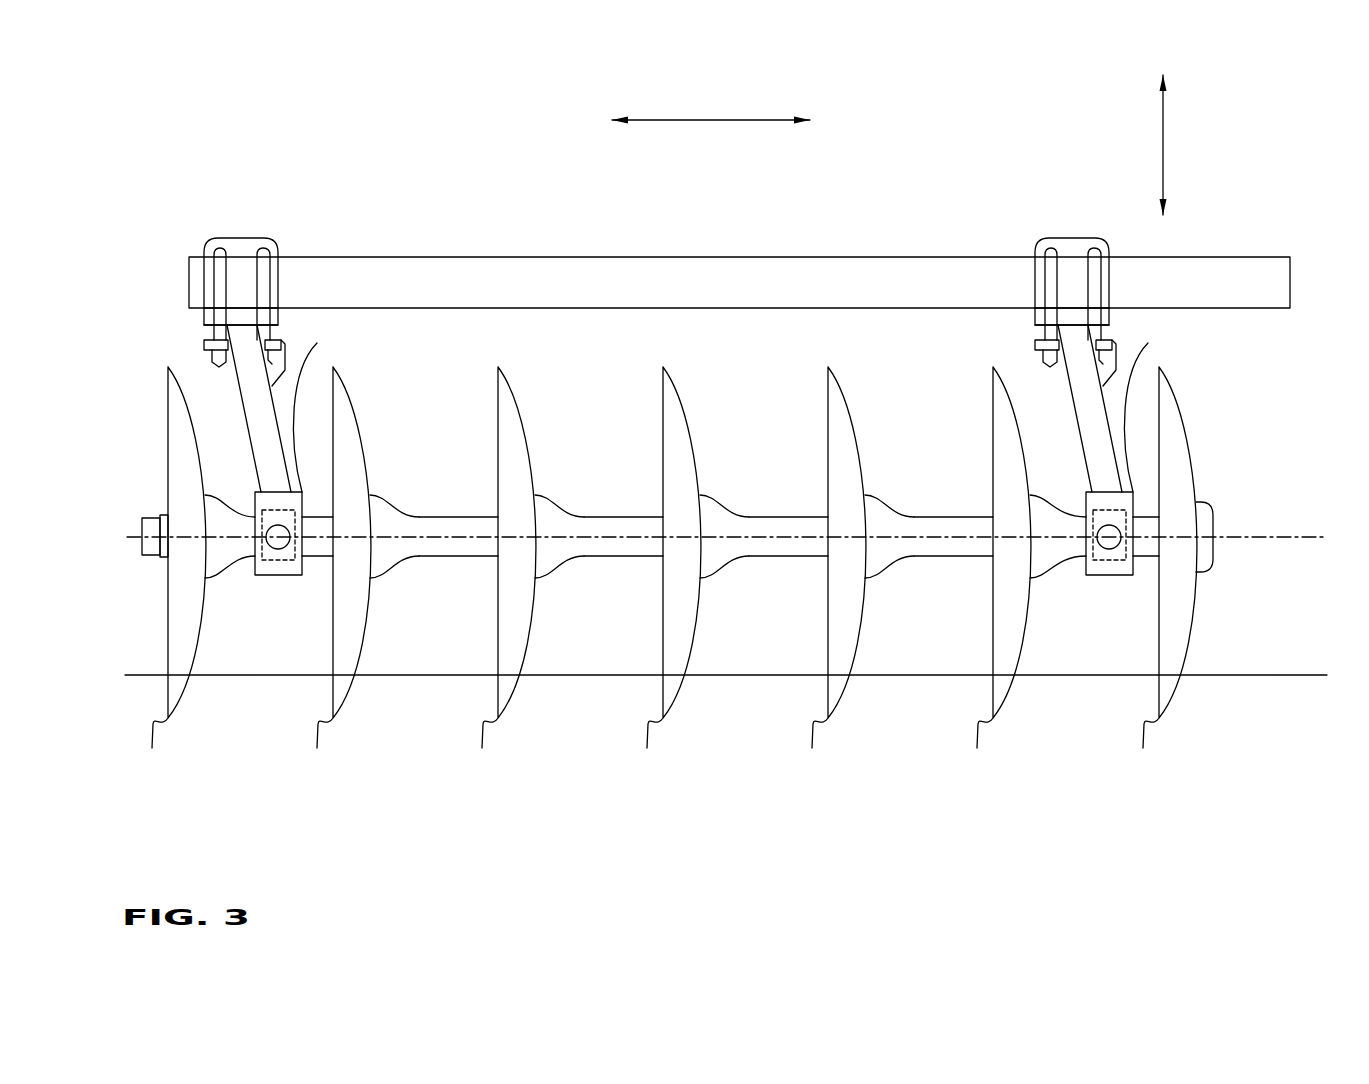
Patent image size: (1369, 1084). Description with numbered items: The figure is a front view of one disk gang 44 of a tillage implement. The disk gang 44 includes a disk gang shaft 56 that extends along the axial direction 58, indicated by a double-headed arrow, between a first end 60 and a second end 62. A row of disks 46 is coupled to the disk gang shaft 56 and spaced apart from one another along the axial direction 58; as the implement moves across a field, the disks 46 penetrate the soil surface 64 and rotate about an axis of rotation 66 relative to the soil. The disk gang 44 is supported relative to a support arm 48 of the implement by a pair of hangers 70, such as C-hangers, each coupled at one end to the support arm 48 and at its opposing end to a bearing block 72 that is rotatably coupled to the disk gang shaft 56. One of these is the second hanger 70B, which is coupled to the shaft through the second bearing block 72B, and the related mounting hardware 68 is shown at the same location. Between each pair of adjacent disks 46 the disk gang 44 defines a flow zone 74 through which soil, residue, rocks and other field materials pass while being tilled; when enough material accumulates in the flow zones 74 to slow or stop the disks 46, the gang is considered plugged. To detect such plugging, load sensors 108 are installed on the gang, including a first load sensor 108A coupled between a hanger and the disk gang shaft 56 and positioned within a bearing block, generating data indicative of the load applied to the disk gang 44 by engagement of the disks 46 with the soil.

The disk gang 44 is at (245, 123).
The disks 46 is at (667, 573).
The support arm 48 is at (343, 257).
The disk gang shaft 56 is at (437, 556).
The axial direction 58 is at (700, 120).
The first end 60 is at (112, 530).
The second end 62 is at (1237, 522).
The soil surface 64 is at (1233, 675).
The axis of rotation 66 is at (1163, 150).
The mounting assembly 68 is at (242, 408).
The hangers 70 is at (604, 360).
The second hanger 70B is at (601, 362).
The bearing blocks 72 is at (737, 408).
The second bearing block 72B is at (720, 417).
The flow zones 74 is at (273, 654).
The load sensors 108 is at (275, 563).
The first load sensor 108A is at (666, 636).